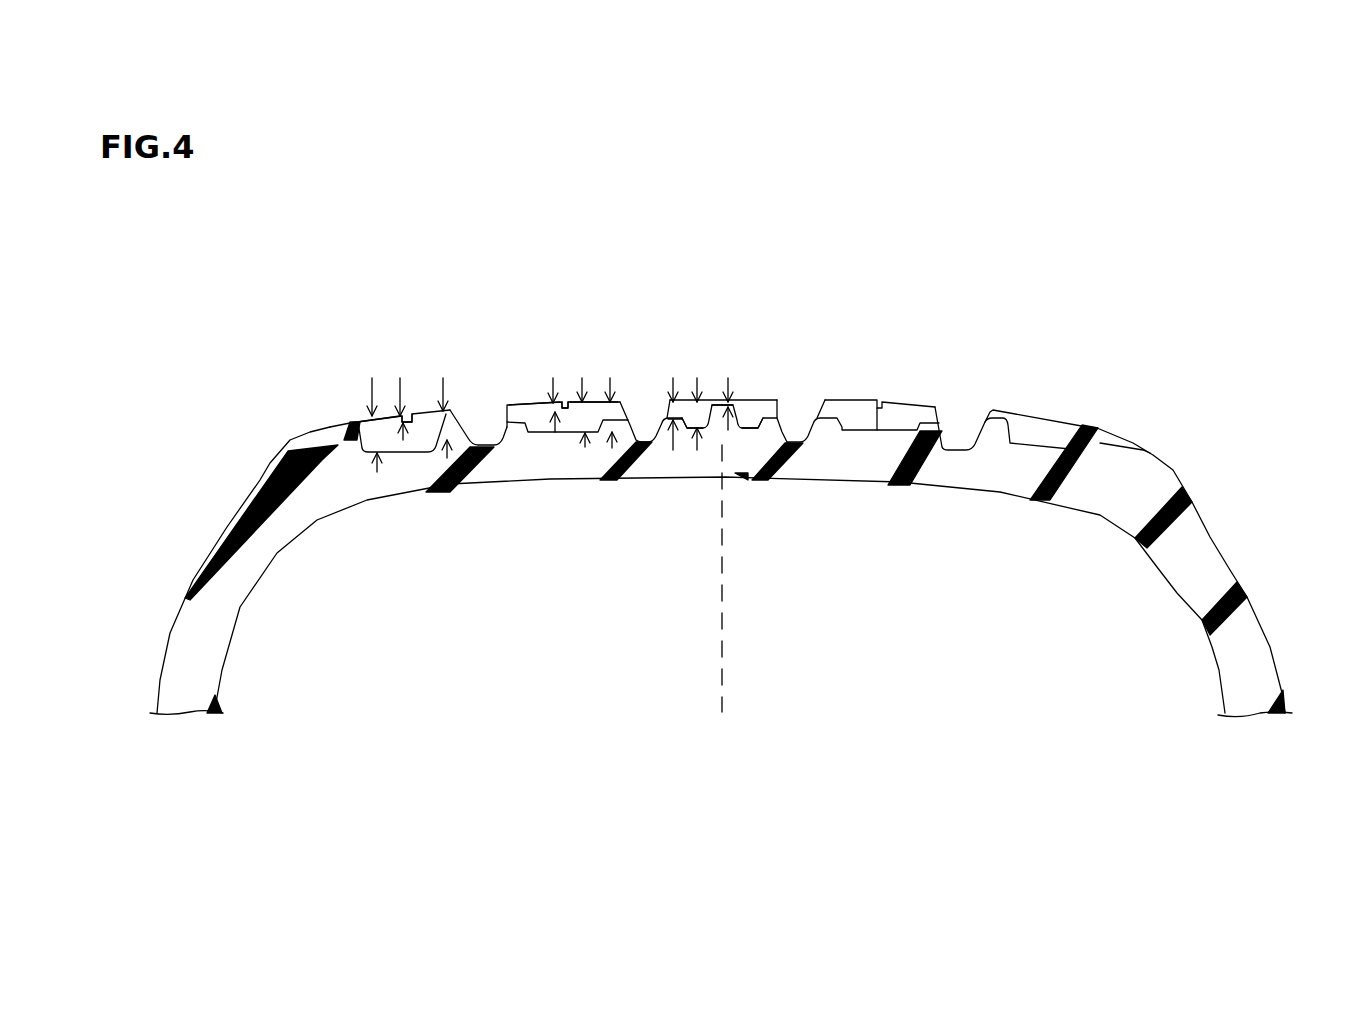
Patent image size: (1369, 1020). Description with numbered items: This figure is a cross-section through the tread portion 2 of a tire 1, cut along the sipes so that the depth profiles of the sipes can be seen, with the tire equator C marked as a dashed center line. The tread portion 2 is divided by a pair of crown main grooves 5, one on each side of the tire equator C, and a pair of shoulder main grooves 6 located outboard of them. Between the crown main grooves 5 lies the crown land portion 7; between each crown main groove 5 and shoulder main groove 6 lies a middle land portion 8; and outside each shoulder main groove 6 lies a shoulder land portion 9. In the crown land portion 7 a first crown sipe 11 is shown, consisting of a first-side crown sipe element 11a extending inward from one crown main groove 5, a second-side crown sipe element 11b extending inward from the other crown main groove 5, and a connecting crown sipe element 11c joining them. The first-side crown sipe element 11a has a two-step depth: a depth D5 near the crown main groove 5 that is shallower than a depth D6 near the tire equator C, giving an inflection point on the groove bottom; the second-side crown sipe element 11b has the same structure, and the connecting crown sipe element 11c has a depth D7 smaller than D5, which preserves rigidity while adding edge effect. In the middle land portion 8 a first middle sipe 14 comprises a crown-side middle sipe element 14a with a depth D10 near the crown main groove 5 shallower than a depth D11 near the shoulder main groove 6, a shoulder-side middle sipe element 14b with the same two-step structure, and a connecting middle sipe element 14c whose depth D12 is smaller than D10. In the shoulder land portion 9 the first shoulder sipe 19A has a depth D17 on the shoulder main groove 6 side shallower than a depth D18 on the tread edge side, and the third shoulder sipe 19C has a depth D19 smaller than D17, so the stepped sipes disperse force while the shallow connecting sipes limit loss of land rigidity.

The tire 1 is at (1233, 240).
The tread portion 2 is at (723, 331).
The crown main grooves 5 is at (647, 440).
The shoulder main grooves 6 is at (482, 443).
The crown land portion 7 is at (662, 365).
The middle land portions 8 is at (625, 372).
The shoulder land portions 9 is at (357, 363).
The first crown sipes 11 is at (830, 312).
The first-side crown sipe element 11a is at (688, 410).
The second-side crown sipe element 11b is at (752, 410).
The connecting crown sipe element 11c is at (715, 410).
The first middle sipes 14 is at (626, 321).
The crown-side middle sipe element 14a is at (593, 410).
The shoulder-side middle sipe element 14b is at (523, 413).
The connecting middle sipe element 14c is at (553, 413).
The first shoulder sipe 19A is at (362, 418).
The third shoulder sipe 19C is at (413, 413).
The depth of first-side crown sipe element on crown main groove side D5 is at (650, 445).
The depth of first-side crown sipe element on tire equator side D6 is at (688, 455).
The depth of connecting crown sipe element D7 is at (750, 440).
The depth of crown-side middle sipe element on crown main groove side D10 is at (603, 455).
The depth of crown-side middle sipe element on shoulder main groove side D11 is at (567, 435).
The depth of connecting middle sipe element D12 is at (510, 455).
The depth of first shoulder sipe on shoulder main groove side D17 is at (398, 440).
The depth of first shoulder sipe on tread edge side D18 is at (375, 458).
The depth of third shoulder sipe D19 is at (400, 427).
The tire equator C is at (722, 596).